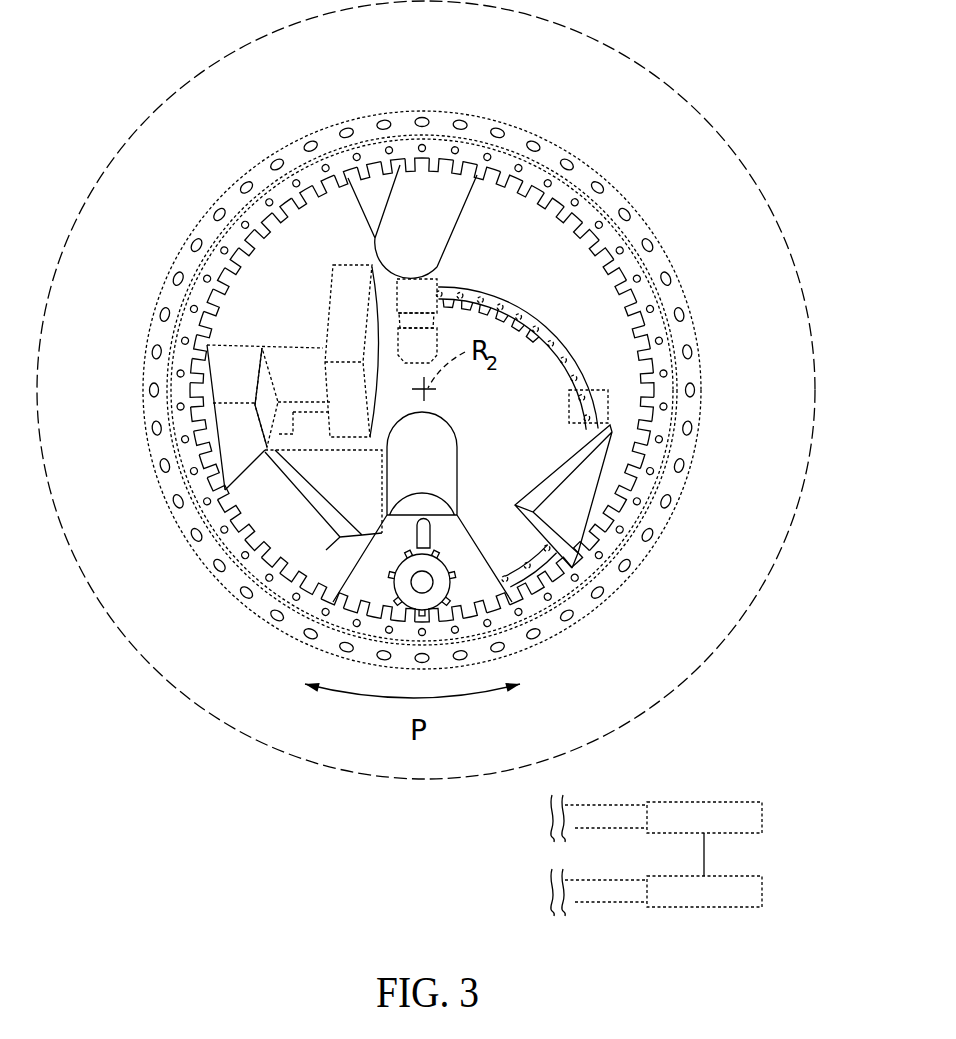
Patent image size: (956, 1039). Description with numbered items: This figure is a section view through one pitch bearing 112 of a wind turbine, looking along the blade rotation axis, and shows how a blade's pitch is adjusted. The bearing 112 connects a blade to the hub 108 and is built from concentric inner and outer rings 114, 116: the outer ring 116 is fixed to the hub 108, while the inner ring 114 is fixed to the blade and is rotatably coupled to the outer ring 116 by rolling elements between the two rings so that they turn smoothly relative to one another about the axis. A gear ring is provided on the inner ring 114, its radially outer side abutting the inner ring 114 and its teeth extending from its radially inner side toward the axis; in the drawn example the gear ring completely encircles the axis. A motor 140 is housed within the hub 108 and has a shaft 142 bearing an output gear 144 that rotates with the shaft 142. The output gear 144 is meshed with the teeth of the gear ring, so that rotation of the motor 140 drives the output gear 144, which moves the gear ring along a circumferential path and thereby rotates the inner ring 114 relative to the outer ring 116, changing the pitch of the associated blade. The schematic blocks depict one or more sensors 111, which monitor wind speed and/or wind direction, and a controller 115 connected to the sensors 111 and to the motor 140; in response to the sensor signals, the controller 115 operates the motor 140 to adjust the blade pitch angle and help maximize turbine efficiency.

The hub 108 is at (724, 540).
The pitch bearing 112 is at (688, 262).
The inner ring 114 is at (190, 488).
The outer ring 116 is at (197, 556).
The motor 140 is at (398, 473).
The shaft 142 is at (400, 542).
The output gear 144 is at (480, 596).
The sensors 111 is at (763, 818).
The controller 115 is at (763, 892).